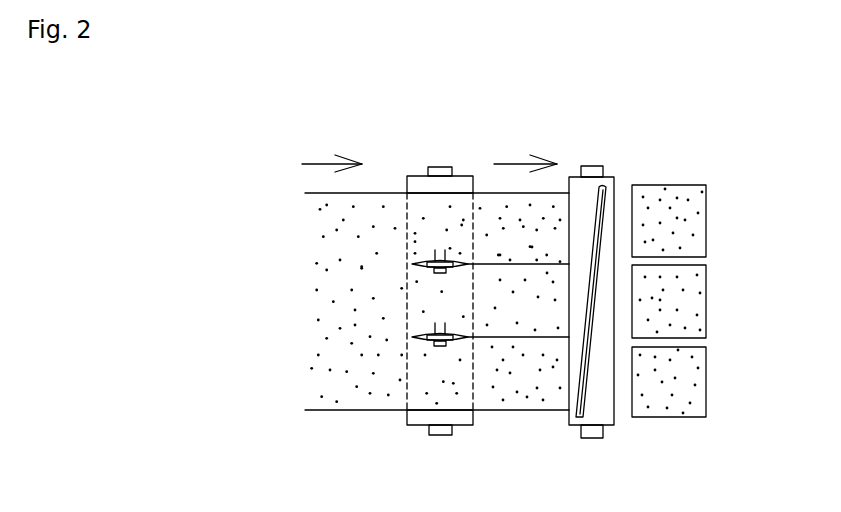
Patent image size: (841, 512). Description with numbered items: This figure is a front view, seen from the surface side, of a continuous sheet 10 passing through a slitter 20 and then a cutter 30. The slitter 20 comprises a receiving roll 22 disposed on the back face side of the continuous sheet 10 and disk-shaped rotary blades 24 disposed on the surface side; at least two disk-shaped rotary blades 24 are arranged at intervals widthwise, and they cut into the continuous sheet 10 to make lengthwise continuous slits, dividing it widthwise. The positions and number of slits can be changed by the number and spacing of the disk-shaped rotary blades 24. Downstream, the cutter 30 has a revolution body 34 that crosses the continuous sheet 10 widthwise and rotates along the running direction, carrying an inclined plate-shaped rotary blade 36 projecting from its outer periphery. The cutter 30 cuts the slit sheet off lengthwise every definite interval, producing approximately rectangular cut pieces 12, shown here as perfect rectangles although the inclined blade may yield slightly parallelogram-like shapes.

The continuous sheet 10 is at (360, 388).
The cut pieces 12 is at (698, 308).
The slitter 20 is at (442, 167).
The receiving roll 22 is at (463, 177).
The disk-shaped rotary blade 24 is at (420, 263).
The cutter 30 is at (600, 166).
The revolution body 34 is at (607, 403).
The plate-shaped rotary blade 36 is at (578, 390).